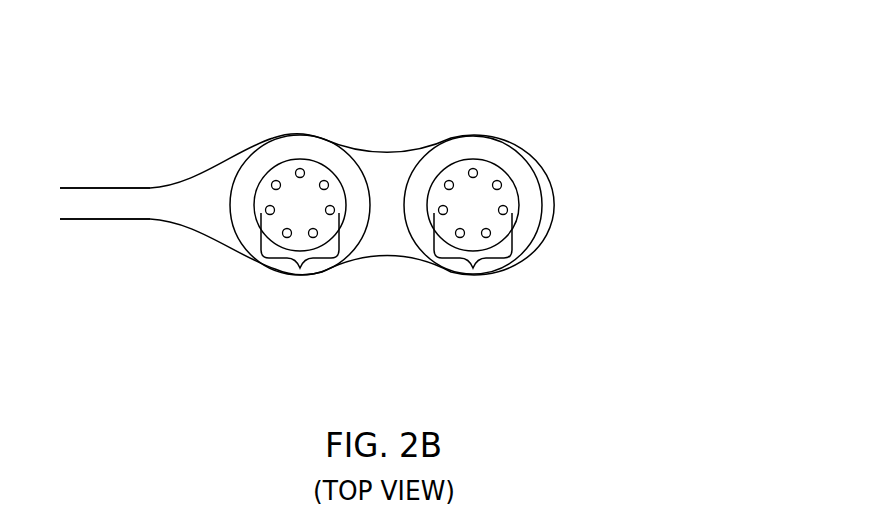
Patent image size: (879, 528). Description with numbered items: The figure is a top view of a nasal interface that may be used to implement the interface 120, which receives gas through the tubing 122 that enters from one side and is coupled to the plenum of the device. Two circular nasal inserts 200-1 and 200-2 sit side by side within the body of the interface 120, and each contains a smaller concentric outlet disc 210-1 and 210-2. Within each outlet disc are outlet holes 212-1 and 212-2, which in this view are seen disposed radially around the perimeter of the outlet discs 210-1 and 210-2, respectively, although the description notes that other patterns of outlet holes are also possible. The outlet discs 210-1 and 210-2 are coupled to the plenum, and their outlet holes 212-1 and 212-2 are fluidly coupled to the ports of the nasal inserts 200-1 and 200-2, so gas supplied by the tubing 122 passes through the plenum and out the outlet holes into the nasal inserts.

The interface 120 is at (669, 124).
The tubing 122 is at (97, 187).
The nasal insert 200-1 is at (290, 148).
The nasal insert 200-2 is at (497, 150).
The outlet disc 210-1 is at (255, 205).
The outlet disc 210-2 is at (519, 212).
The outlet holes 212-1 is at (300, 268).
The outlet holes 212-2 is at (473, 268).